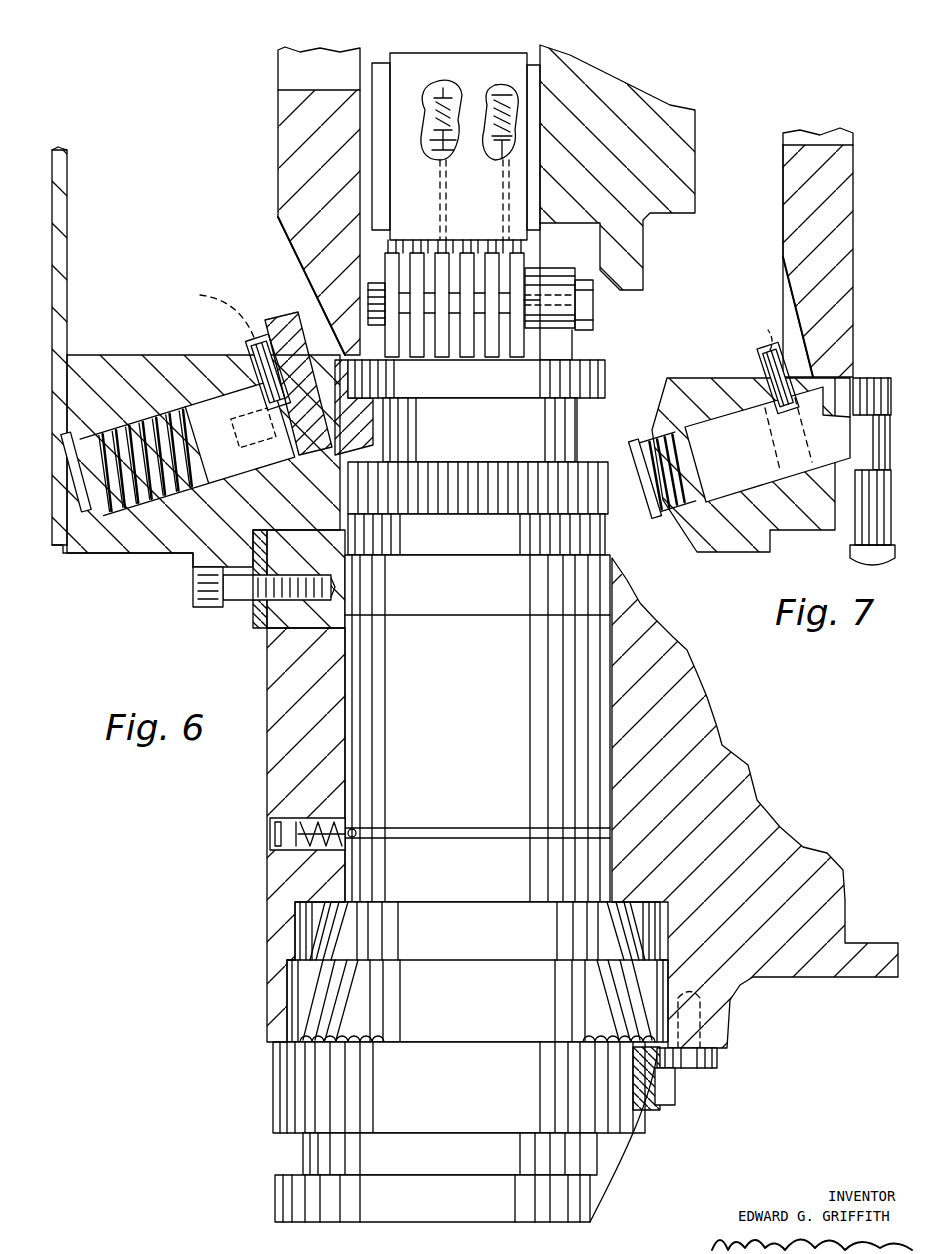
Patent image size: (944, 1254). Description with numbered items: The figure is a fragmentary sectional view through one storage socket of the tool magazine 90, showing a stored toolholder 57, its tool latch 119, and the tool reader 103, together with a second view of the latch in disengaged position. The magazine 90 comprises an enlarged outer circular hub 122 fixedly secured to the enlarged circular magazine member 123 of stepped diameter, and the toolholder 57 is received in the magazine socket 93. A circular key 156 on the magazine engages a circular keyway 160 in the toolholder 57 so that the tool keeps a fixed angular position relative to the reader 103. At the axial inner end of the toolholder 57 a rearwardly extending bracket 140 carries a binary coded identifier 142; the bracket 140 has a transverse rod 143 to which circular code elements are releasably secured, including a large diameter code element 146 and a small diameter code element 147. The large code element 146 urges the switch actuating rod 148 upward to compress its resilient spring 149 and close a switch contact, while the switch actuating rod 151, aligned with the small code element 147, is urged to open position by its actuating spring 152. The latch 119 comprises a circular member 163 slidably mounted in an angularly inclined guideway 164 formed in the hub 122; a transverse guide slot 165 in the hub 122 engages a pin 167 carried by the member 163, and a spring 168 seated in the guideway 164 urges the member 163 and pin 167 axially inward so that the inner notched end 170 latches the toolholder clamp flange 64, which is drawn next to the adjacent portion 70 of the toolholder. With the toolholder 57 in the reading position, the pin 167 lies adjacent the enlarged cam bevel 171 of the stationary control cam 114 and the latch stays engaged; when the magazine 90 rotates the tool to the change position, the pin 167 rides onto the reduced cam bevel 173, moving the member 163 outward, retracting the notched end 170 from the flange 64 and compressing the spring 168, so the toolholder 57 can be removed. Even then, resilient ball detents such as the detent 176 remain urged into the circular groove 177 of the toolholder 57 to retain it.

In FIG. 6, the toolholder 57 is at (467, 744).
In FIG. 7, the toolholder 57 is at (870, 535).
In FIG. 6, the toolholder clamp flange 64 is at (570, 375).
In FIG. 7, the toolholder clamp flange 64 is at (864, 386).
In FIG. 6, the neck portion 70 is at (497, 403).
In FIG. 7, the neck portion 70 is at (868, 422).
In FIG. 6, the magazine 90 is at (168, 660).
In FIG. 6, the magazine socket 93 is at (360, 670).
In FIG. 6, the tool reader 103 is at (462, 50).
In FIG. 6, the control cam 114 is at (283, 77).
In FIG. 7, the control cam 114 is at (816, 120).
In FIG. 6, the latch 119 is at (283, 320).
In FIG. 6, the magazine hub 122 is at (185, 553).
In FIG. 7, the magazine hub 122 is at (745, 555).
In FIG. 6, the magazine member 123 is at (725, 775).
In FIG. 6, the bracket 140 is at (555, 345).
In FIG. 6, the binary coded identifier 142 is at (383, 270).
In FIG. 6, the rod 143 is at (580, 300).
In FIG. 6, the large diameter code element 146 is at (440, 250).
In FIG. 6, the small diameter code element 147 is at (500, 280).
In FIG. 6, the switch actuating rod 148 is at (432, 152).
In FIG. 6, the resilient spring 149 is at (452, 108).
In FIG. 6, the switch actuating rod 151 is at (507, 190).
In FIG. 6, the actuating spring 152 is at (515, 115).
In FIG. 6, the circular key 156 is at (718, 1058).
In FIG. 6, the circular keyway 160 is at (672, 1085).
In FIG. 6, the circular member 163 is at (262, 472).
In FIG. 7, the circular member 163 is at (744, 466).
In FIG. 6, the inclined guideway 164 is at (178, 378).
In FIG. 7, the inclined guideway 164 is at (690, 487).
In FIG. 6, the transverse guide slot 165 is at (258, 370).
In FIG. 7, the transverse guide slot 165 is at (760, 390).
In FIG. 6, the pin 167 is at (258, 347).
In FIG. 7, the pin 167 is at (763, 362).
In FIG. 6, the spring 168 is at (128, 546).
In FIG. 7, the spring 168 is at (668, 500).
In FIG. 6, the notched end 170 is at (368, 424).
In FIG. 7, the notched end 170 is at (843, 400).
In FIG. 6, the enlarged cam bevel 171 is at (282, 265).
In FIG. 7, the enlarged cam bevel 171 is at (797, 310).
In FIG. 6, the reduced cam bevel 173 is at (202, 308).
In FIG. 7, the reduced cam bevel 173 is at (770, 350).
In FIG. 6, the resilient ball detent 176 is at (290, 838).
In FIG. 6, the circular groove 177 is at (360, 850).